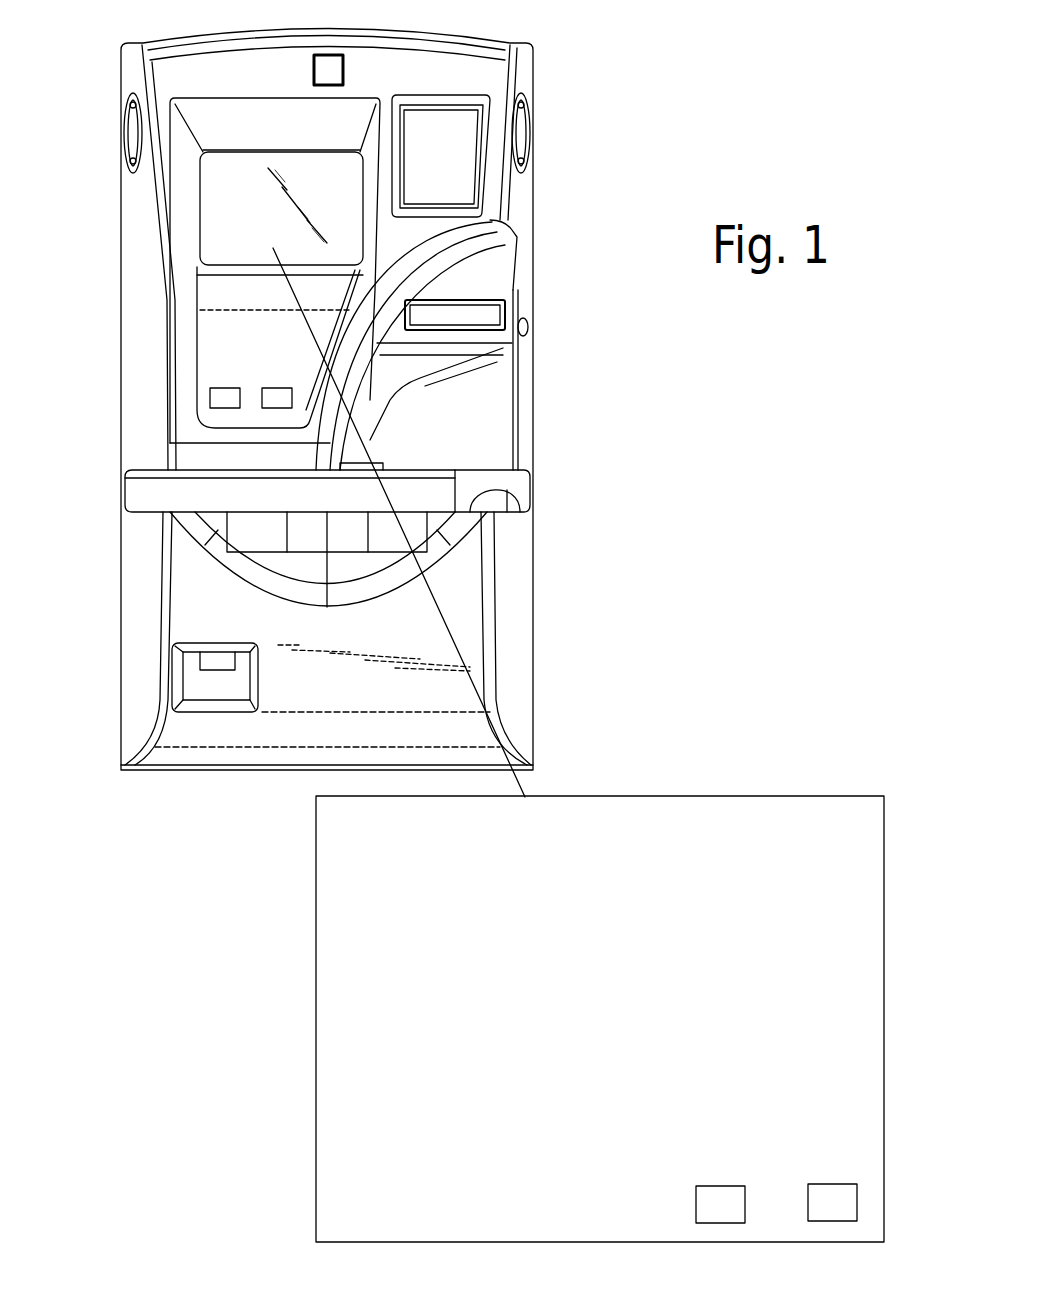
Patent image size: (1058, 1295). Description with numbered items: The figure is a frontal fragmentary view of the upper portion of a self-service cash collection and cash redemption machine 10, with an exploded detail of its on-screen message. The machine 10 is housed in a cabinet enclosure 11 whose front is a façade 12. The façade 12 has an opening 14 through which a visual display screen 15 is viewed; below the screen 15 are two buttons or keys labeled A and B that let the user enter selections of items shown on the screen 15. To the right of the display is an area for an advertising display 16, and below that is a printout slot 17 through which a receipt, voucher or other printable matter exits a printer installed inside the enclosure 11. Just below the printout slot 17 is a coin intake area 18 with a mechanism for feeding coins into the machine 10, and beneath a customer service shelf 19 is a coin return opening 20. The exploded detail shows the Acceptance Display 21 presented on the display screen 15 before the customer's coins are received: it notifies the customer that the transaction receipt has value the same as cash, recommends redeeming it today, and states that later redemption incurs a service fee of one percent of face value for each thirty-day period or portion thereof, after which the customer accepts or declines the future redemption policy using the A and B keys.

The self-service cash collection and cash redemption machine 10 is at (636, 111).
The cabinet enclosure 11 is at (536, 581).
The façade 12 is at (357, 697).
The opening 14 is at (260, 150).
The visual display screen 15 is at (257, 223).
The advertising display 16 is at (452, 174).
The printout slot 17 is at (503, 308).
The coin intake area 18 is at (470, 467).
The customer service shelf 19 is at (183, 497).
The coin return opening 20 is at (172, 690).
The Acceptance Display 21 is at (641, 796).